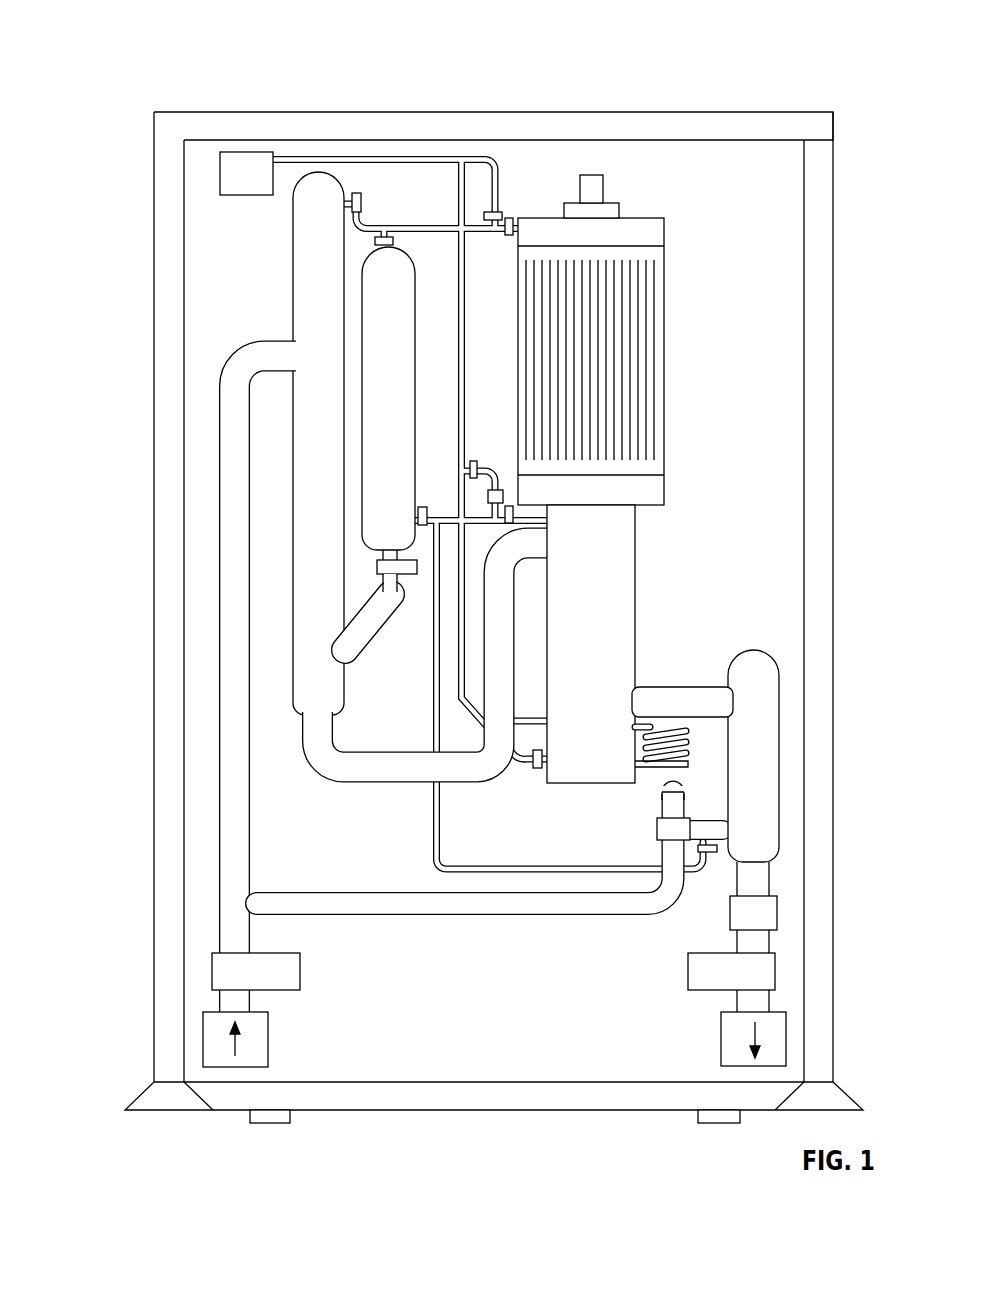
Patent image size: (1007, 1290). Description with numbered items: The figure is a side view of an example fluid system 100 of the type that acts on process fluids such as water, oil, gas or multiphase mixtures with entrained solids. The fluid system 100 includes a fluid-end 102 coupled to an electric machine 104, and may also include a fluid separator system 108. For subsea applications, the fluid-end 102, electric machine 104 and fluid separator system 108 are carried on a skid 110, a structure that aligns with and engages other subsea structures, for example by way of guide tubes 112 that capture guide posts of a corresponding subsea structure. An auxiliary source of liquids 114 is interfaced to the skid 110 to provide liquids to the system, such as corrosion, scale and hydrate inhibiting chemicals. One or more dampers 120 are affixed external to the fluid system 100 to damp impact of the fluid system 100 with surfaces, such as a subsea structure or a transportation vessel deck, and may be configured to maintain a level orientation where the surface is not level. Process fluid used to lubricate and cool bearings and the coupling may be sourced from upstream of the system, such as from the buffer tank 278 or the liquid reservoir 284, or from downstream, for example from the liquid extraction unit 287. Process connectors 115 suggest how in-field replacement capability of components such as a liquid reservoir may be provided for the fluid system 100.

The fluid system 100 is at (140, 44).
The fluid-end 102 is at (628, 593).
The electric machine 104 is at (643, 357).
The fluid separator system 108 is at (389, 190).
The skid 110 is at (740, 125).
The guide tube 112 is at (822, 422).
The auxiliary source of liquids 114 is at (230, 168).
The process connector 115 is at (258, 1041).
The damper 120 is at (248, 1116).
The buffer tank 278 is at (300, 260).
The liquid reservoir 284 is at (378, 323).
The liquid extraction unit 287 is at (748, 667).